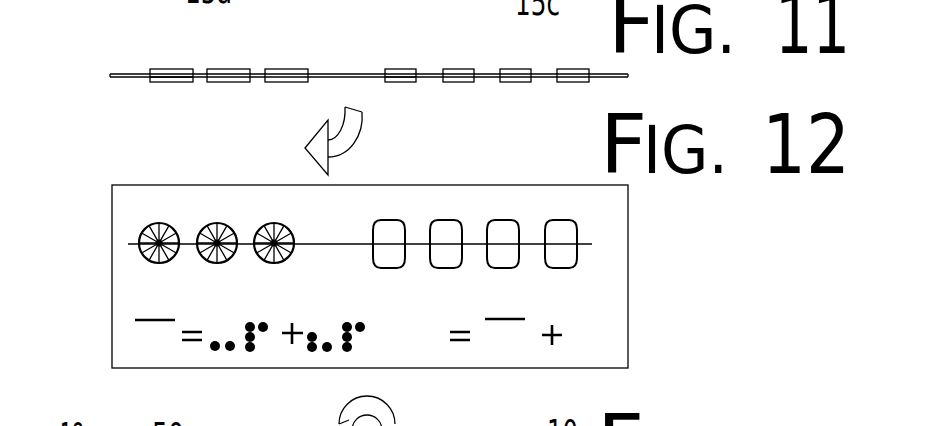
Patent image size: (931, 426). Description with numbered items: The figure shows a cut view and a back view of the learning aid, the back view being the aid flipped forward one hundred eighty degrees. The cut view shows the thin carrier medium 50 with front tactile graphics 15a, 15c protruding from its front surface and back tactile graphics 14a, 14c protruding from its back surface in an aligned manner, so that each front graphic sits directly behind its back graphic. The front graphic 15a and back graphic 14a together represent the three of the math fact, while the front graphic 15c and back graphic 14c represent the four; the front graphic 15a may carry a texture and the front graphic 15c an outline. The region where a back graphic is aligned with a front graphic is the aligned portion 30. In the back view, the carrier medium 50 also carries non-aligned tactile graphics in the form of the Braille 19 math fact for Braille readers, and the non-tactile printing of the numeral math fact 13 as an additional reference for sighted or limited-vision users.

In FIG. 11, the carrier medium 50 is at (110, 75).
In FIG. 12, the carrier medium 50 is at (112, 277).
In FIG. 11, the back tactile graphic 14a is at (230, 70).
In FIG. 12, the back tactile graphic 14a is at (215, 225).
In FIG. 11, the back tactile graphic 14c is at (450, 70).
In FIG. 12, the back tactile graphic 14c is at (510, 220).
In FIG. 11, the front tactile graphic 15a is at (167, 82).
In FIG. 11, the front tactile graphic 15c is at (402, 80).
In FIG. 12, the aligned portion 30 is at (625, 238).
In FIG. 12, the numeral math fact 13 is at (598, 332).
In FIG. 12, the Braille math fact 19 is at (248, 343).